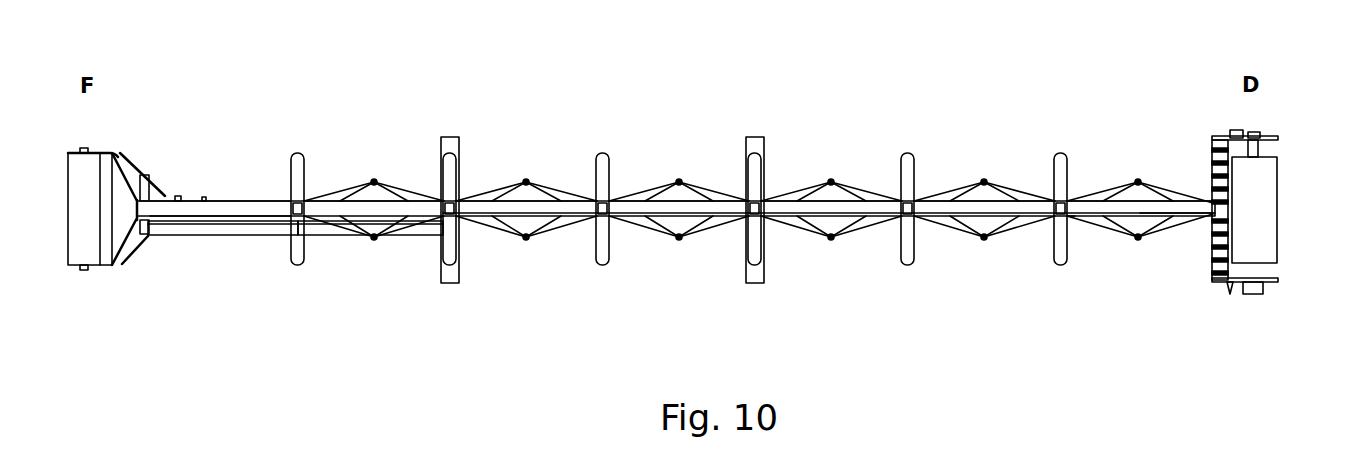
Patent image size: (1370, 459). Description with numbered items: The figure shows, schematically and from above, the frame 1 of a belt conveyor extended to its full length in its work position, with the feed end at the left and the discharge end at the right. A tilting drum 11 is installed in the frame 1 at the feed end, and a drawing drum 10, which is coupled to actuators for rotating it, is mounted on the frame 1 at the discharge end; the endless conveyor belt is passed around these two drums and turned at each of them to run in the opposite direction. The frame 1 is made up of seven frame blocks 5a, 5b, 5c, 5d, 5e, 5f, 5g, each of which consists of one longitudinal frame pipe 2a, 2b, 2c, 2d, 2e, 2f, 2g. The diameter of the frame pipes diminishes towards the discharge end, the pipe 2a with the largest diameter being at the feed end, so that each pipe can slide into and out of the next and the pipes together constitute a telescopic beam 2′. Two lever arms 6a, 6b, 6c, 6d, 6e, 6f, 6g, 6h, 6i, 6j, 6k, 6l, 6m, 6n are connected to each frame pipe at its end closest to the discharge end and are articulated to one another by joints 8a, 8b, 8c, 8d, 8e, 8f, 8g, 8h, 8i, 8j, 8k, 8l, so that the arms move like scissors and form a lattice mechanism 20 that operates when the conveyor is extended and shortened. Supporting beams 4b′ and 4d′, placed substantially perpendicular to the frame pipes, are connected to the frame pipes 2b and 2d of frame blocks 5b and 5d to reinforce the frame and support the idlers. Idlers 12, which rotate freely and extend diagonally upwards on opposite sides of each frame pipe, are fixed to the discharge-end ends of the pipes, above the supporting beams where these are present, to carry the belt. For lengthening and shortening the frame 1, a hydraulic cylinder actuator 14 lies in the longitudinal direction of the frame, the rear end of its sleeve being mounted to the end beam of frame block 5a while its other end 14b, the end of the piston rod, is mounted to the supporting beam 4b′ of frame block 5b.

The frame 1 is at (826, 60).
The drawing drum 10 is at (1262, 215).
The tilting drum 11 is at (75, 250).
The idlers 12 is at (296, 153).
The actuator 14 is at (160, 232).
The other end of the hydraulic cylinder 14b is at (322, 232).
The lattice mechanism 20 is at (347, 200).
The frame pipe 2a is at (236, 203).
The frame pipe 2b is at (416, 203).
The frame pipe 2c is at (572, 203).
The telescopic beam 2′ is at (620, 201).
The frame pipe 2d is at (716, 203).
The frame pipe 2e is at (871, 203).
The frame pipe 2f is at (1046, 203).
The frame pipe 2g is at (1176, 203).
The supporting beam 4b′ is at (452, 284).
The supporting beam 4d′ is at (756, 284).
The frame block 5a is at (220, 259).
The frame block 5b is at (403, 242).
The frame block 5c is at (557, 242).
The frame block 5d is at (706, 242).
The frame block 5e is at (860, 242).
The frame block 5f is at (1012, 242).
The frame block 5g is at (1108, 259).
The lever arm 6a is at (322, 200).
The lever arm 6b is at (352, 240).
The lever arm 6c is at (490, 230).
The lever arm 6d is at (480, 200).
The lever arm 6e is at (626, 222).
The lever arm 6f is at (641, 200).
The lever arm 6g is at (779, 222).
The lever arm 6h is at (781, 200).
The lever arm 6i is at (928, 222).
The lever arm 6j is at (947, 200).
The lever arm 6k is at (1082, 222).
The lever arm 6l is at (1098, 200).
The lever arm 6m is at (1190, 193).
The lever arm 6n is at (1190, 226).
The joint 8a is at (375, 181).
The joint 8b is at (376, 240).
The joint 8c is at (528, 181).
The joint 8d is at (528, 240).
The joint 8e is at (678, 181).
The joint 8f is at (681, 240).
The joint 8g is at (832, 181).
The joint 8h is at (833, 240).
The joint 8i is at (986, 181).
The joint 8j is at (986, 240).
The joint 8k is at (1138, 181).
The joint 8l is at (1140, 240).